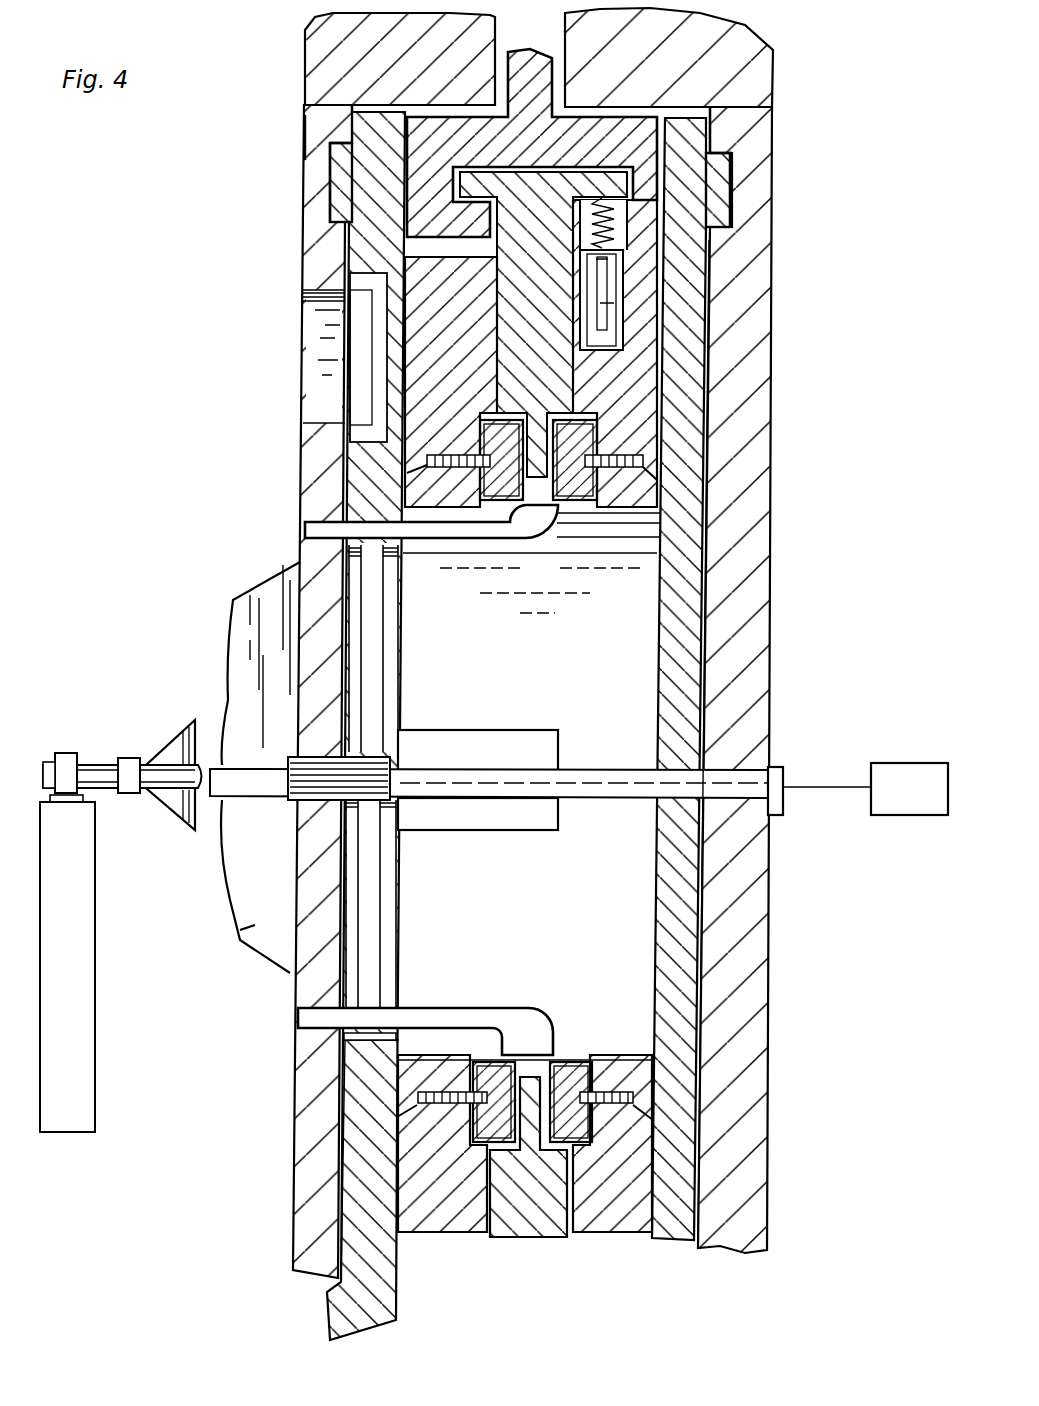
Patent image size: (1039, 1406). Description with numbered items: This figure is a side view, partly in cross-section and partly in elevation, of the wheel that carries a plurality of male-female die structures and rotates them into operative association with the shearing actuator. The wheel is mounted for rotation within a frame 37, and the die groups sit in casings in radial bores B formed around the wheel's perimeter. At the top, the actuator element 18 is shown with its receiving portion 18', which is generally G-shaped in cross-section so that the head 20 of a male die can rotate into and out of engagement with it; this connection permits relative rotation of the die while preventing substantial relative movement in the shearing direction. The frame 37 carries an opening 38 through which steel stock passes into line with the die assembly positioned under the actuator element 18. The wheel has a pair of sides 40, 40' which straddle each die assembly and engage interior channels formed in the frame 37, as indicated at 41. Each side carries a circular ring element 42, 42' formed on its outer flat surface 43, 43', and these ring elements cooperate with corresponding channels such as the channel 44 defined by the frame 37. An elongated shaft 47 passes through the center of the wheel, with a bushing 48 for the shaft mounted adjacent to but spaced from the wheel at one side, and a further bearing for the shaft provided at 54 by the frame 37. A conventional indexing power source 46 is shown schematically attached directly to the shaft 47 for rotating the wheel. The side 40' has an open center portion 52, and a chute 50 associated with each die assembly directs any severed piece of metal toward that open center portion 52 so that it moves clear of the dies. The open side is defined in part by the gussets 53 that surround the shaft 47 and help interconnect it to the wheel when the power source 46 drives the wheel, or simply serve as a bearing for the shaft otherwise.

The actuator element 18 is at (532, 124).
The receiving portion 18' is at (531, 289).
The head 20 is at (612, 203).
The frame 37 is at (760, 320).
The opening 38 is at (315, 360).
The side 40 is at (739, 679).
The side 40' is at (339, 724).
The interior channels 41 is at (372, 92).
The circular ring element 42 is at (768, 199).
The circular ring element 42' is at (279, 182).
The outer flat surface 43 is at (757, 740).
The outer flat surface 43' is at (277, 1161).
The channel 44 is at (731, 163).
The indexing power source 46 is at (913, 772).
The shaft 47 is at (130, 740).
The bushing 48 is at (72, 757).
The chute 50 is at (310, 528).
The open center portion 52 is at (160, 664).
The gussets 53 is at (248, 940).
The bearing 54 is at (757, 805).
The radial bores B is at (308, 137).